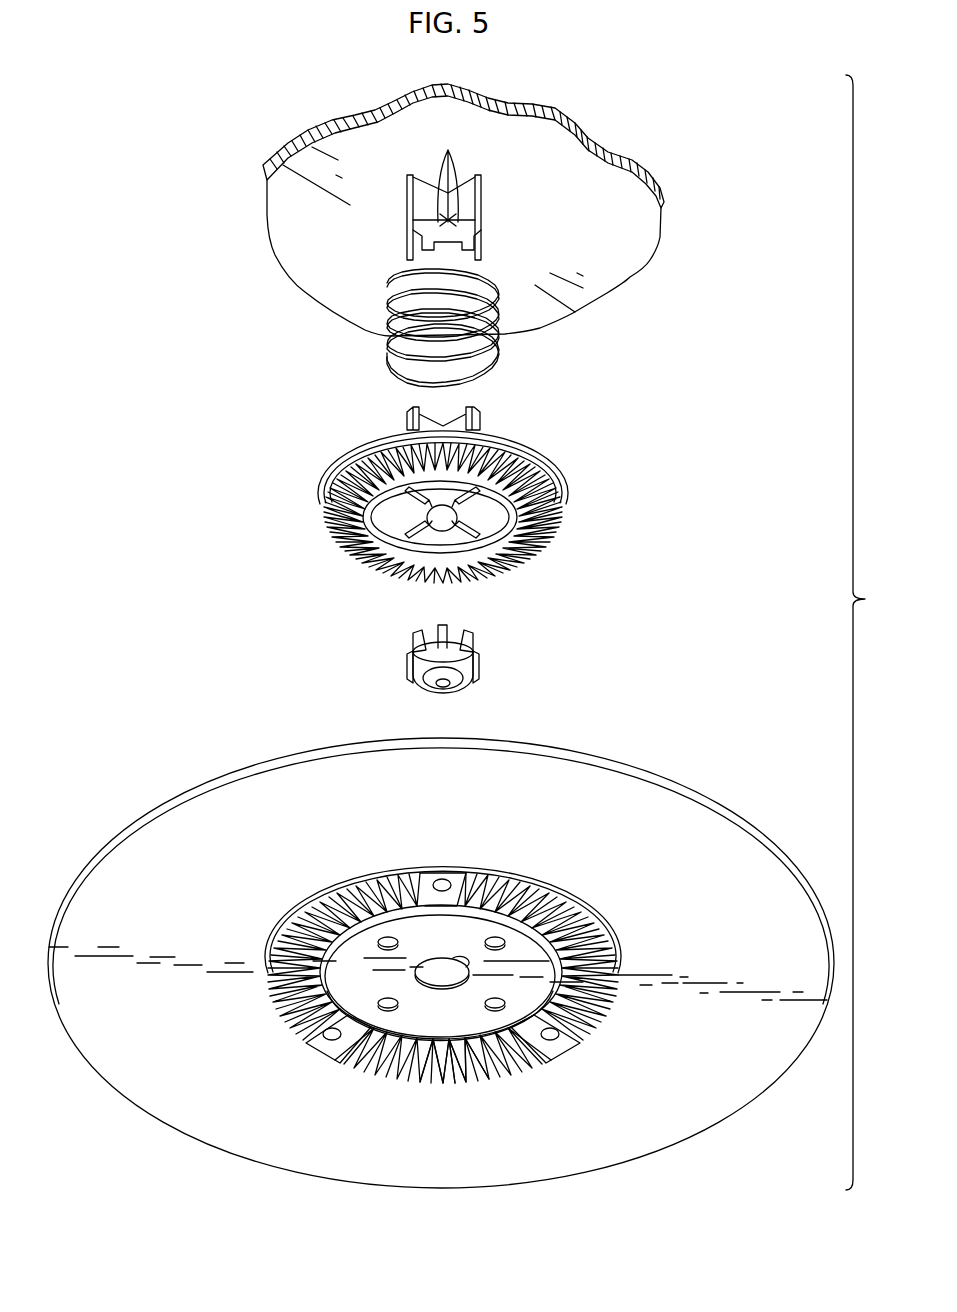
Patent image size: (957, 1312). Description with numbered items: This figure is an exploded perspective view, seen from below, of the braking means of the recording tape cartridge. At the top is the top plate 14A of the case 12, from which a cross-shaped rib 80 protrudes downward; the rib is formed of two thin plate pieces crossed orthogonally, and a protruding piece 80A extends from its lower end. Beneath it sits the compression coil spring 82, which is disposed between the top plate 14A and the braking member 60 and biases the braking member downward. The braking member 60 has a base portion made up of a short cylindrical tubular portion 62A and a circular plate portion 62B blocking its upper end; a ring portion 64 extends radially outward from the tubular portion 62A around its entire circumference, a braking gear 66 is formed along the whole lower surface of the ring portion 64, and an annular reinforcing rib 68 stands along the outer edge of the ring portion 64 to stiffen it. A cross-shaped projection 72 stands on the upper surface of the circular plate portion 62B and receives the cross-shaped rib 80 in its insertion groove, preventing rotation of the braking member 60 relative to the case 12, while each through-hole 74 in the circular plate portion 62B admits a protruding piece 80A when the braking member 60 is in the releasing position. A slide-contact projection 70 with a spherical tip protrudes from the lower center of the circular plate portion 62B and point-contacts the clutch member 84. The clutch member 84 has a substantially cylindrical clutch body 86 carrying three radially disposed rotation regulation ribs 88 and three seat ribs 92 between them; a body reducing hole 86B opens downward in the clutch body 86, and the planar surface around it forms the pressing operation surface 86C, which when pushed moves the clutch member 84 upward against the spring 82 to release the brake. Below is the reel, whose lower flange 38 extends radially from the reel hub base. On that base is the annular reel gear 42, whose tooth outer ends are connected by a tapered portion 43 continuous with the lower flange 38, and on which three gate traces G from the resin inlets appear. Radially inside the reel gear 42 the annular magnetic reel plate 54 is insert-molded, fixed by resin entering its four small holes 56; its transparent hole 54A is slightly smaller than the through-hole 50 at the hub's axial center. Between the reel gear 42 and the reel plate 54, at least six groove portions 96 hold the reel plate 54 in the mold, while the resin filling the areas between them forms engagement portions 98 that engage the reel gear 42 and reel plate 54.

The case 12 is at (504, 210).
The top plate 14A is at (583, 180).
The cross-shaped rib 80 is at (450, 194).
The protruding piece 80A is at (482, 242).
The compression coil spring 82 is at (505, 357).
The braking member 60 is at (441, 509).
The cross-shaped projection 72 is at (483, 421).
The annular reinforcing rib 68 is at (568, 470).
The ring portion 64 is at (570, 497).
The braking gear 66 is at (568, 532).
The tubular portion 62A is at (326, 524).
The circular plate portion 62B is at (500, 576).
The through-hole 74 is at (592, 593).
The slide-contact projection 70 is at (440, 530).
The clutch member 84 is at (467, 664).
The seat rib 92 is at (408, 664).
The rotation regulation rib 88 is at (475, 641).
The clutch body 86 is at (469, 688).
The body reducing hole 86B is at (437, 693).
The pressing operation surface 86C is at (458, 687).
The lower flange 38 is at (612, 778).
The tapered portion 43 is at (573, 900).
The reel gear 42 is at (519, 905).
The small hole 56 is at (488, 1067).
The gate trace G is at (441, 878).
The engagement portion 98 is at (380, 1070).
The groove portion 96 is at (497, 1007).
The reel plate 54 is at (542, 930).
The through-hole 50 is at (587, 955).
The transparent hole 54A is at (750, 950).